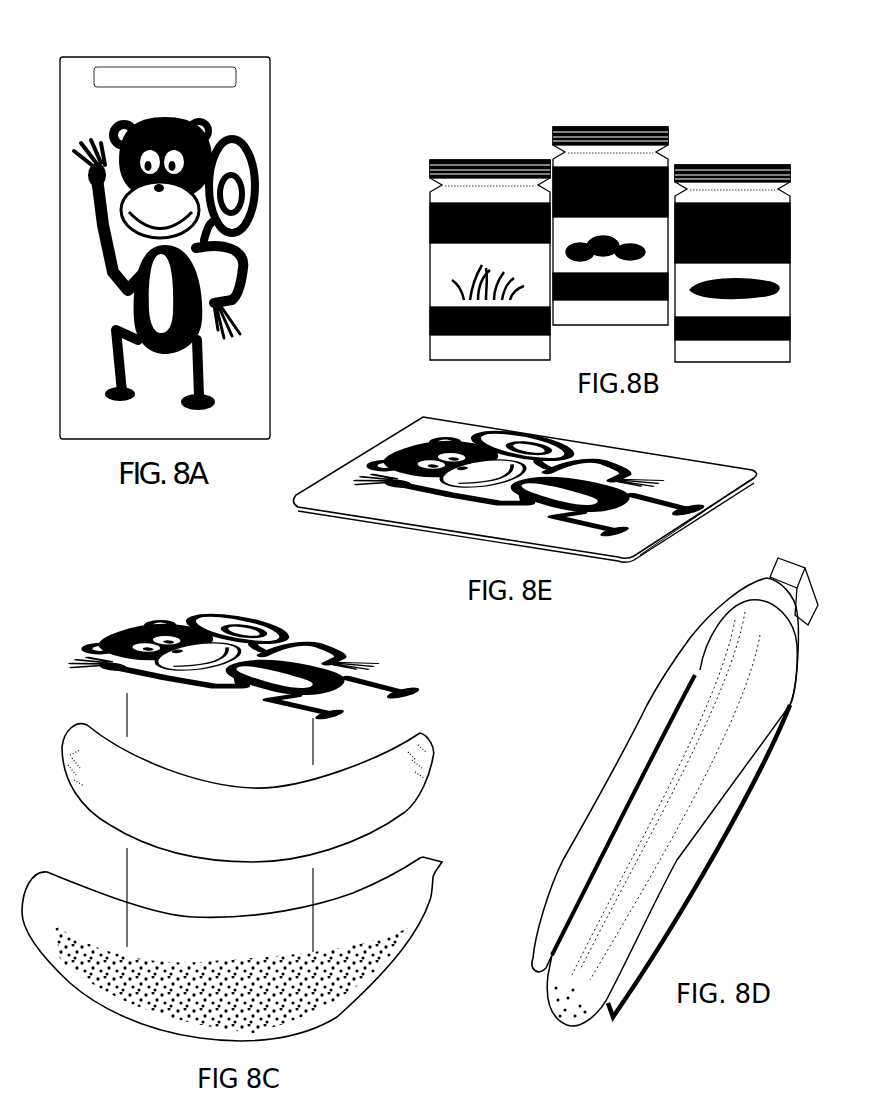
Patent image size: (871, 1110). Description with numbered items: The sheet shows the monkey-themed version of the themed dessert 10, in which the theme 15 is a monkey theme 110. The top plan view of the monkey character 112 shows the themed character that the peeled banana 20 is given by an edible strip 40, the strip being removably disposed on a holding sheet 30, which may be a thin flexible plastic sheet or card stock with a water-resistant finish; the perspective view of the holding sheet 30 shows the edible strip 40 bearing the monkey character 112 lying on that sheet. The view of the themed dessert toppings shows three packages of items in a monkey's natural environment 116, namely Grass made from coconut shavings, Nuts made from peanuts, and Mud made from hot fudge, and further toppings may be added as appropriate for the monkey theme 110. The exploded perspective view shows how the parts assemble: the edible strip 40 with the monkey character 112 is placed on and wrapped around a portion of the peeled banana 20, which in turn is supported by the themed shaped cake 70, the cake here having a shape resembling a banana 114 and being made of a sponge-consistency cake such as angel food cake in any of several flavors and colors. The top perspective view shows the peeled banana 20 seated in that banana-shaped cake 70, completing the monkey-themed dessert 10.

In FIG. 8B, the themed dessert 10 is at (530, 121).
In FIG. 8C, the themed dessert 10 is at (267, 606).
In FIG. 8B, the theme 15 is at (593, 99).
In FIG. 8B, the items in a monkey's natural environment 116 is at (704, 117).
In FIG. 8A, the monkey character 112 is at (296, 105).
In FIG. 8C, the monkey character 112 is at (110, 620).
In FIG. 8A, the holding sheet 30 is at (272, 162).
In FIG. 8E, the holding sheet 30 is at (677, 525).
In FIG. 8A, the edible strip 40 is at (249, 279).
In FIG. 8E, the edible strip 40 is at (688, 492).
In FIG. 8C, the peeled banana 20 is at (87, 723).
In FIG. 8D, the peeled banana 20 is at (696, 731).
In FIG. 8C, the banana 114 is at (82, 890).
In FIG. 8D, the banana 114 is at (738, 789).
In FIG. 8C, the themed shaped cake 70 is at (55, 942).
In FIG. 8D, the themed shaped cake 70 is at (696, 872).
In FIG. 8C, the monkey theme 110 is at (448, 1038).